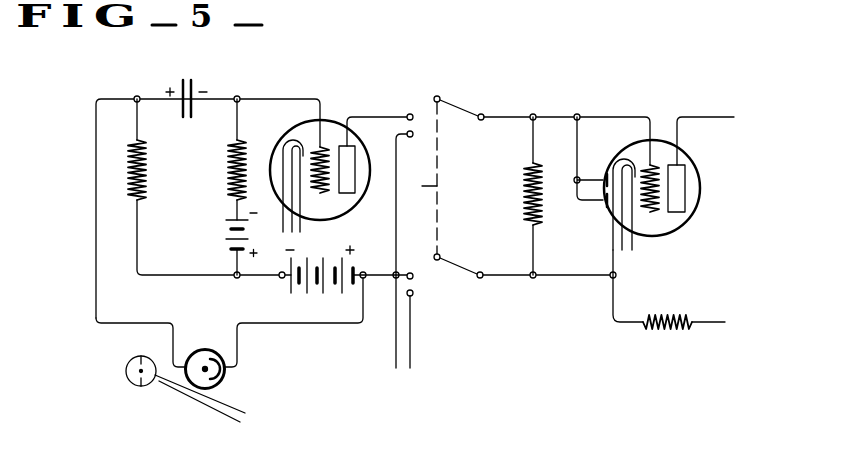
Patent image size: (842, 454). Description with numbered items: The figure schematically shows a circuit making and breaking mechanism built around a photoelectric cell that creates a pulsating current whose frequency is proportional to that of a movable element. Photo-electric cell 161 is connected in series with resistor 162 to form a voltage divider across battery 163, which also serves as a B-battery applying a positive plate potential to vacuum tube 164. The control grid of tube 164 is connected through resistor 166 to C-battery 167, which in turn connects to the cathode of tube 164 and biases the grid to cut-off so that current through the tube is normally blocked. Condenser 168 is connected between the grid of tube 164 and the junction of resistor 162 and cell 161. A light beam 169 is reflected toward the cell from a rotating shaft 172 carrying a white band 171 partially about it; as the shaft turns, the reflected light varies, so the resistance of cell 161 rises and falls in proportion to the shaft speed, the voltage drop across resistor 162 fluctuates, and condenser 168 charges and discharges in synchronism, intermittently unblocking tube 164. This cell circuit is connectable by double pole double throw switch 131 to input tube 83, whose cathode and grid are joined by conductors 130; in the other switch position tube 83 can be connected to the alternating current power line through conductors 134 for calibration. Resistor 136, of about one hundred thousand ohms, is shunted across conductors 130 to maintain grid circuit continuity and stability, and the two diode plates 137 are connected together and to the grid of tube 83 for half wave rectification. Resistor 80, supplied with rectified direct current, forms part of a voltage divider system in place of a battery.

The condenser 168 is at (193, 80).
The resistor 162 is at (142, 198).
The resistor 166 is at (228, 150).
The C-battery 167 is at (221, 232).
The battery 163 is at (318, 257).
The vacuum tube 164 is at (330, 120).
The conductors 134 is at (421, 350).
The photo-electric cell 161 is at (222, 381).
The white band 171 is at (128, 378).
The rotating shaft 172 is at (146, 361).
The light beam 169 is at (183, 389).
The double pole double throw switch 131 is at (440, 196).
The conductors 130 is at (553, 292).
The resistor 136 is at (526, 215).
The diode plates 137 is at (604, 211).
The tube 83 is at (700, 205).
The resistor 80 is at (666, 316).